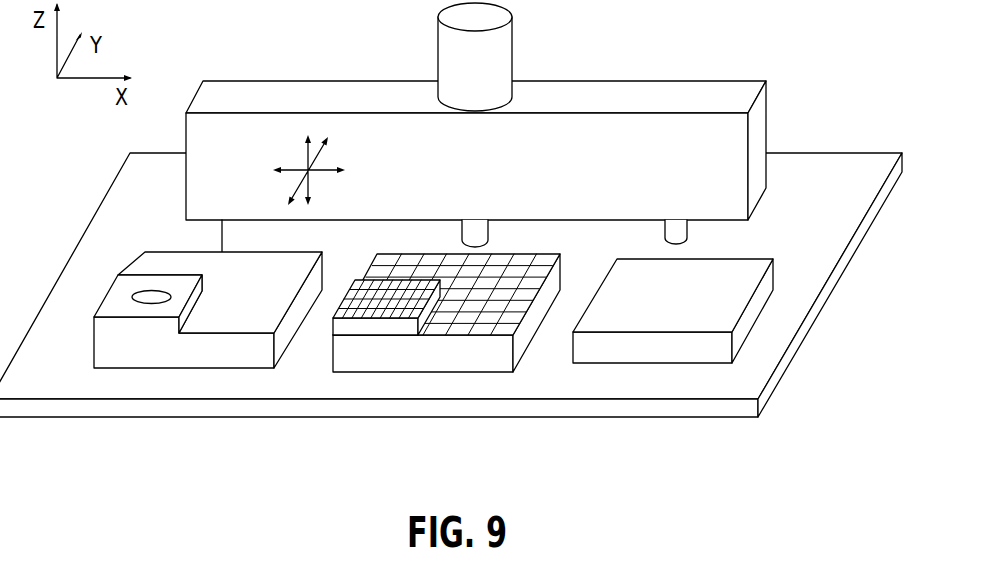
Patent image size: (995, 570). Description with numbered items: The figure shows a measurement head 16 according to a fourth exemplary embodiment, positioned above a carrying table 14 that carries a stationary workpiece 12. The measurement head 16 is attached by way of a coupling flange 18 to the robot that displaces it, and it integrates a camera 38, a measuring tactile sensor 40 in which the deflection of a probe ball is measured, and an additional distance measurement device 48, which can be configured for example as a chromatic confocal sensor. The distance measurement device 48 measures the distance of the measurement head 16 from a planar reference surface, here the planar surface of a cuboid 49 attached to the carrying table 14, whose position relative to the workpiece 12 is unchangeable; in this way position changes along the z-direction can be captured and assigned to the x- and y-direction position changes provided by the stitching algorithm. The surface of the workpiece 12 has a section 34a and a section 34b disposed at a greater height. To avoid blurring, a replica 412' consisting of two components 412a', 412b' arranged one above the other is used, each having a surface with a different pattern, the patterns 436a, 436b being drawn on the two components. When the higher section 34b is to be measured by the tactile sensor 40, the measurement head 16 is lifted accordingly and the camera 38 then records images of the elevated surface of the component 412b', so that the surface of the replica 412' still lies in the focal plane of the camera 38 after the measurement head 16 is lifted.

The workpiece 12 is at (169, 279).
The carrying table 14 is at (773, 388).
The measurement head 16 is at (243, 92).
The coupling flange 18 is at (512, 56).
The section of the workpiece surface 34a is at (152, 258).
The section of the workpiece surface 34b is at (123, 281).
The camera 38 is at (490, 232).
The measuring tactile sensor 40 is at (200, 256).
The distance measurement device 48 is at (684, 232).
The cuboid 49 is at (610, 287).
The replica 412' is at (449, 356).
The component of the replica 412a' is at (441, 363).
The component of the replica 412b' is at (390, 376).
The first grid pattern 436a is at (467, 265).
The second grid pattern 436b is at (363, 283).